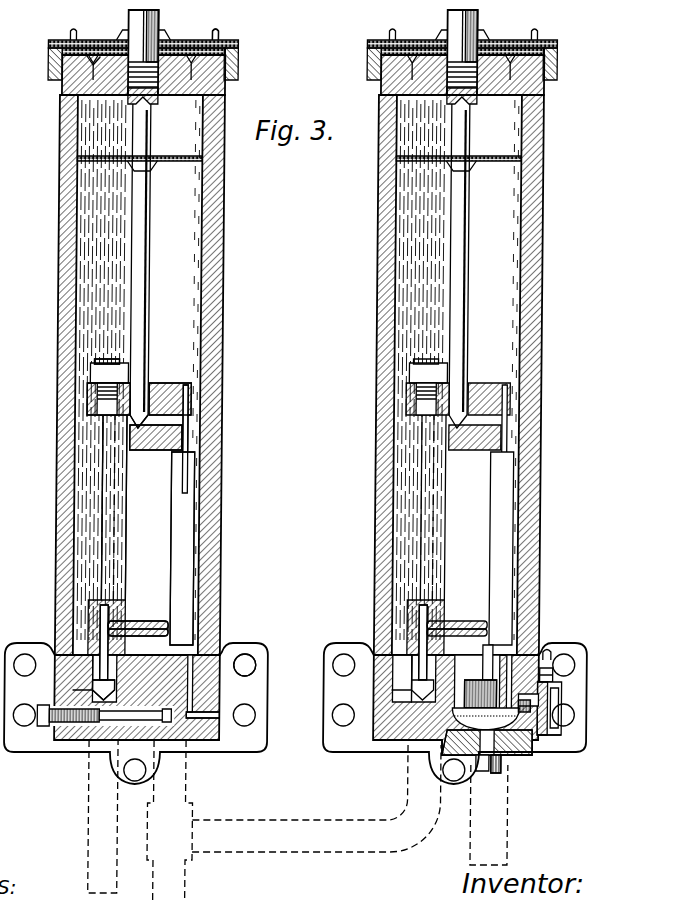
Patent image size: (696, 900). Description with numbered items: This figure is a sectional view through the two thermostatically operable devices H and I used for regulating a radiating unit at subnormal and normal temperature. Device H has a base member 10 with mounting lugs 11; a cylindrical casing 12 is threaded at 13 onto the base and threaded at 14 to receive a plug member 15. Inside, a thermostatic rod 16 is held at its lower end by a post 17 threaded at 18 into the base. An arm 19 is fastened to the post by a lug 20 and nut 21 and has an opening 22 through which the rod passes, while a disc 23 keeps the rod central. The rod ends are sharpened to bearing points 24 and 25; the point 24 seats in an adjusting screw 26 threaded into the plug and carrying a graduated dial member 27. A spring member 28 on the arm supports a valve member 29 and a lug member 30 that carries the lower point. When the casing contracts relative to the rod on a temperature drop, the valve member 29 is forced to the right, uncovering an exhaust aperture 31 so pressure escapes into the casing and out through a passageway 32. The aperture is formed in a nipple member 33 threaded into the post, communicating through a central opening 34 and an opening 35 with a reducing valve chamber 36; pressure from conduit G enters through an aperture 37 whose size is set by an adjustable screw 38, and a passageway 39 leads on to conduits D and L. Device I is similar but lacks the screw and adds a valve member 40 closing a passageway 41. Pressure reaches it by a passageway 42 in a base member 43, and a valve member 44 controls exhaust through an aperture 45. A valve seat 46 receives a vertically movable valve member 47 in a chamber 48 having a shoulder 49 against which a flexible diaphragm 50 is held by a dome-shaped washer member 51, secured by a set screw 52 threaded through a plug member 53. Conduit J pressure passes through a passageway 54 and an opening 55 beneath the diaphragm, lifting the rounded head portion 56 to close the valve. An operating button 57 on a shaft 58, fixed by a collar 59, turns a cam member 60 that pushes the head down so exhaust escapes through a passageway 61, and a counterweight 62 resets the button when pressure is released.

The base member 10 is at (262, 681).
The mounting lugs 11 is at (242, 652).
The cylindrical casing 12 is at (215, 517).
The threading 13 is at (212, 660).
The threading 14 is at (218, 84).
The plug member 15 is at (82, 88).
The thermostatic rod 16 is at (152, 244).
The post 17 is at (96, 522).
The threading 18 is at (80, 670).
The arm 19 is at (170, 383).
The lug 20 is at (100, 400).
The nut 21 is at (95, 370).
The opening 22 is at (150, 383).
The disc 23 is at (110, 159).
The bearing point 24 is at (133, 104).
The bearing point 25 is at (134, 426).
The adjusting screw 26 is at (153, 21).
The dial member 27 is at (238, 50).
The spring member 28 is at (191, 422).
The valve member 29 is at (198, 563).
The lug member 30 is at (158, 449).
The exhaust aperture 31 is at (176, 627).
The passageway 32 is at (206, 713).
The nipple member 33 is at (142, 622).
The central opening 34 is at (104, 618).
The opening 35 is at (112, 690).
The reducing valve chamber 36 is at (115, 731).
The aperture 37 is at (80, 727).
The adjustable screw 38 is at (50, 727).
The passageway 39 is at (176, 723).
The valve member 40 is at (524, 656).
The passageway 41 is at (536, 626).
The passageway 42 is at (431, 704).
The base member 43 is at (395, 700).
The valve member 44 is at (527, 575).
The aperture 45 is at (456, 622).
The valve seat 46 is at (489, 680).
The valve member 47 is at (483, 637).
The chamber 48 is at (478, 724).
The shoulder 49 is at (470, 736).
The flexible diaphragm 50 is at (511, 756).
The dome-shaped washer member 51 is at (522, 750).
The adjustable set screw 52 is at (491, 773).
The plug member 53 is at (506, 773).
The passageway 54 is at (455, 744).
The opening 55 is at (477, 759).
The head portion 56 is at (562, 735).
The operating button 57 is at (556, 697).
The shaft 58 is at (546, 710).
The collar 59 is at (561, 676).
The cam member 60 is at (559, 668).
The passageway 61 is at (564, 685).
The counterweight 62 is at (558, 651).